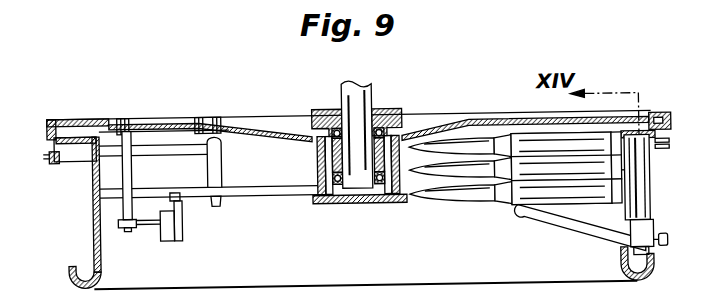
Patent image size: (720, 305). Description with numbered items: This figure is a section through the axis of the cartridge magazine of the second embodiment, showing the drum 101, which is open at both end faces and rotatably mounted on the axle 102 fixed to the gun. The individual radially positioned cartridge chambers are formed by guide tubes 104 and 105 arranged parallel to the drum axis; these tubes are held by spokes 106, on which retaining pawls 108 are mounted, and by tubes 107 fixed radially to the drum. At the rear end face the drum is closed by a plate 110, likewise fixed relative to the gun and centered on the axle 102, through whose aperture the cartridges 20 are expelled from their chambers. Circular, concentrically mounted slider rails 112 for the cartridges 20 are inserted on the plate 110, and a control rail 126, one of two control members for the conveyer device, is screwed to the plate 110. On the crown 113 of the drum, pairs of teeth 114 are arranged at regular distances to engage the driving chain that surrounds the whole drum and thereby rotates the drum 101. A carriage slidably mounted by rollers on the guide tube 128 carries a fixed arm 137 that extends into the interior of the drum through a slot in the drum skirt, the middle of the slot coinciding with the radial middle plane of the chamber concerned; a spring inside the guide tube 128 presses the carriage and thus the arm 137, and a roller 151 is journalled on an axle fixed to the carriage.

The cartridges 20 is at (433, 150).
The drum 101 is at (95, 246).
The axle 102 is at (372, 99).
The guide tube 104 is at (127, 224).
The guide tube 105 is at (220, 203).
The spokes 106 is at (268, 195).
The tubes 107 is at (137, 153).
The retaining pawls 108 is at (174, 236).
The plate 110 is at (178, 121).
The slider rails 112 is at (120, 117).
The crown 113 is at (66, 160).
The pairs of teeth 114 is at (50, 153).
The control rail 126 is at (651, 120).
The guide tube 128 is at (651, 196).
The arm 137 is at (547, 220).
The roller 151 is at (664, 251).